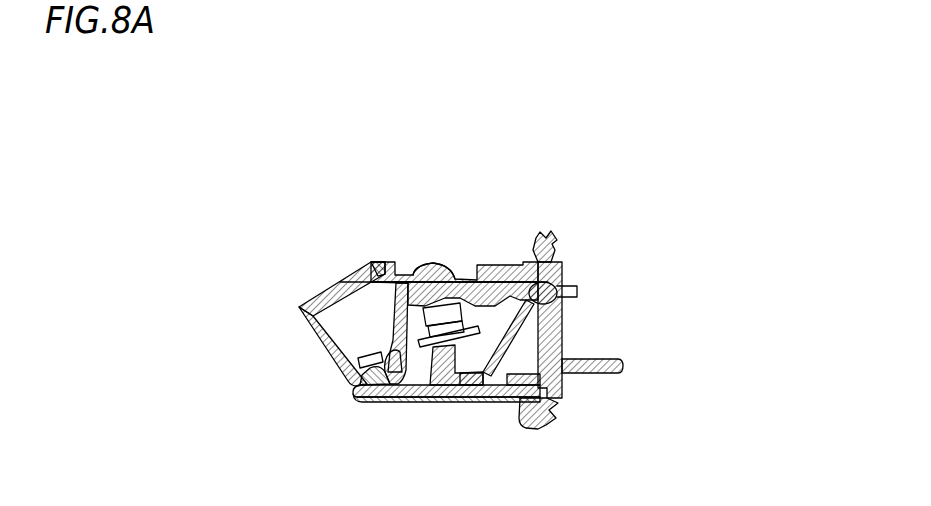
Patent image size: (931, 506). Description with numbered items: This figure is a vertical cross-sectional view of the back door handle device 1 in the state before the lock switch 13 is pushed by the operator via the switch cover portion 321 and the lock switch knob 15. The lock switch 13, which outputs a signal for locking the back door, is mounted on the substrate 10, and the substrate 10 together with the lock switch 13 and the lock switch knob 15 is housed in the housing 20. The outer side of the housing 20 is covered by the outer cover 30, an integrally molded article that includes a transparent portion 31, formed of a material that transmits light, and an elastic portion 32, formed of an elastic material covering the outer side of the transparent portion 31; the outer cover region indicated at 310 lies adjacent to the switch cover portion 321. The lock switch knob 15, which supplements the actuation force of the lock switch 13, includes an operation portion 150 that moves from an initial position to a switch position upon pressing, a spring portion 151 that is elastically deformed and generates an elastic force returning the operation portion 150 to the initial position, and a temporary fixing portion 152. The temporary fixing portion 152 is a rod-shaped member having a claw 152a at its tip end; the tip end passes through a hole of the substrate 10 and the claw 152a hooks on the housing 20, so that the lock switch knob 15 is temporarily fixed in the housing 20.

The back door handle device 1 is at (537, 137).
The substrate 10 is at (362, 361).
The lock switch 13 is at (437, 310).
The lock switch knob 15 is at (551, 290).
The housing 20 is at (373, 378).
The outer cover 30 is at (446, 434).
The transparent portion 31 is at (505, 398).
The elastic portion 32 is at (467, 403).
The operation portion 150 is at (450, 272).
The spring portion 151 is at (513, 332).
The temporary fixing portion 152 is at (397, 322).
The claw 152a is at (398, 376).
The cover wall 310 is at (345, 278).
The switch cover portion 321 is at (437, 265).